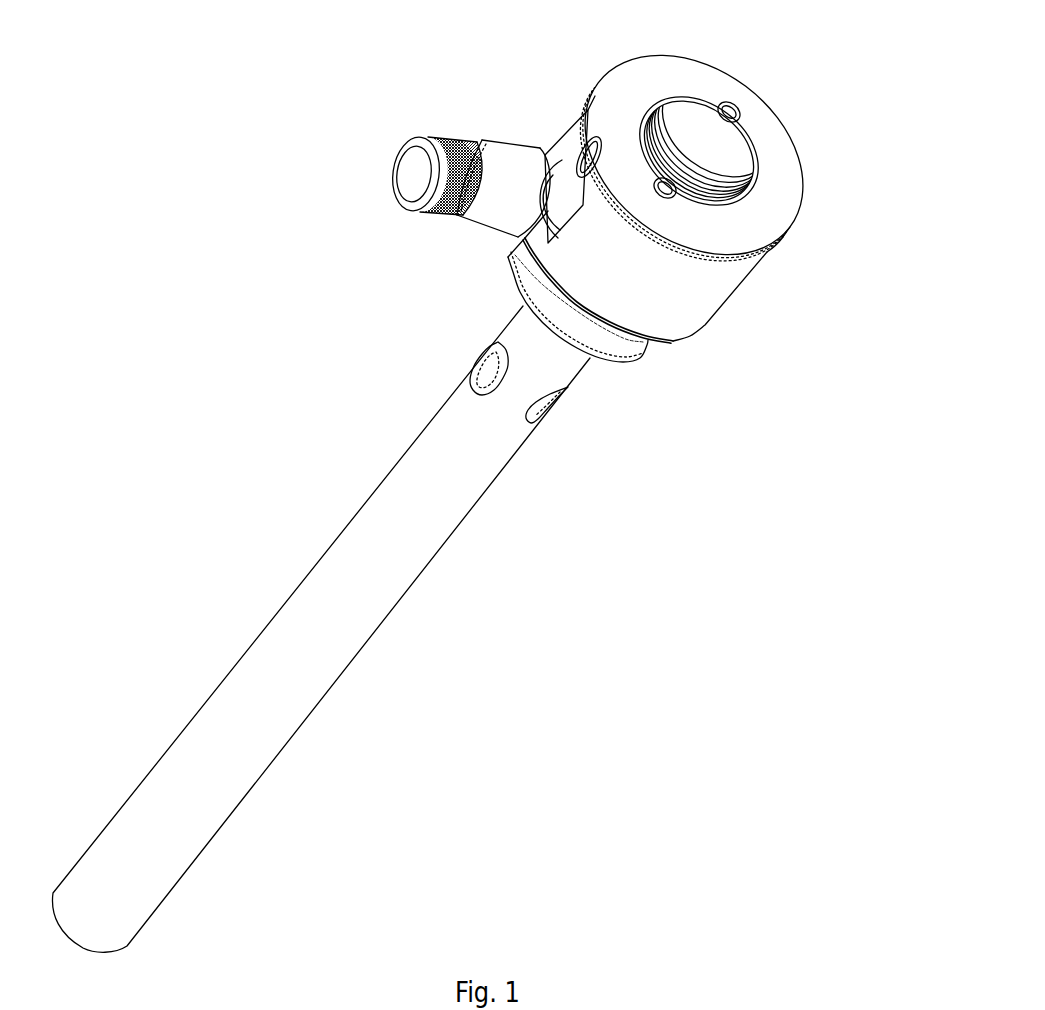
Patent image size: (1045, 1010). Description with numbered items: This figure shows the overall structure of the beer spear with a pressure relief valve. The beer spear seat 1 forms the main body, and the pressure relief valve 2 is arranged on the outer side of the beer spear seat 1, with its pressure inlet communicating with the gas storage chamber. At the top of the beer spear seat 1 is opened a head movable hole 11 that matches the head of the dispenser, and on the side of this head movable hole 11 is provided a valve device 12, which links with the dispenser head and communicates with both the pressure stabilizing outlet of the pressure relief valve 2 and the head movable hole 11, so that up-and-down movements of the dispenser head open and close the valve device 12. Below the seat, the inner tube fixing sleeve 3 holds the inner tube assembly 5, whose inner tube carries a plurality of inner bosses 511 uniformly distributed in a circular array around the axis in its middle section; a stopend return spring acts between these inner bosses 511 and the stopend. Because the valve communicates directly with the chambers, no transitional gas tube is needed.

The beer spear seat 1 is at (767, 212).
The head movable hole 11 is at (712, 153).
The valve device 12 is at (591, 157).
The pressure relief valve 2 is at (477, 190).
The inner tube fixing sleeve 3 is at (602, 338).
The inner tube assembly 5 is at (432, 473).
The inner boss 511 is at (483, 377).